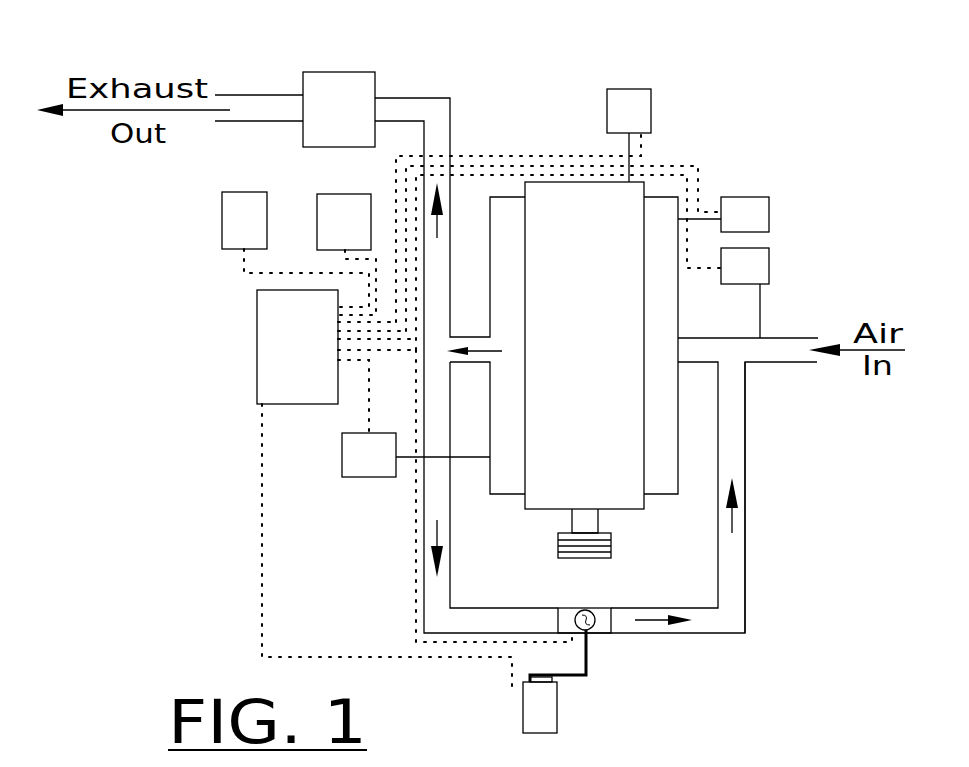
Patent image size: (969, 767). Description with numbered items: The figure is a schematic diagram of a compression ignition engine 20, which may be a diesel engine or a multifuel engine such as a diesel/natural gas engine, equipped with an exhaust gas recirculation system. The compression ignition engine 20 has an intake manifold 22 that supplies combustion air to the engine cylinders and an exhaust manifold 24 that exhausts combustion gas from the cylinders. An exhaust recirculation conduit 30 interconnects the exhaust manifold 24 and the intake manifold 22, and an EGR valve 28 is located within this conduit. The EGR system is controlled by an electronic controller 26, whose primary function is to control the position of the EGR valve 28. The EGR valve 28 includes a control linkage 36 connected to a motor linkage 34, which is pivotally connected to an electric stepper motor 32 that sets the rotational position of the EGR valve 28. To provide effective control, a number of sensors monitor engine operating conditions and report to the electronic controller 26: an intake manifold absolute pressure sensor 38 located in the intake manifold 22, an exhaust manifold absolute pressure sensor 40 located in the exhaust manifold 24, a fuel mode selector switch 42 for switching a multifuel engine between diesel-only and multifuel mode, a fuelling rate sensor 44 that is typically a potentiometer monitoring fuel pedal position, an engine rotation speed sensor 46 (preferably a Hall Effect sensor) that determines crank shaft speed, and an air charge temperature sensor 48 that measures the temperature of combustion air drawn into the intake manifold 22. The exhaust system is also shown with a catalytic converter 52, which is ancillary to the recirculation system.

The compression ignition engine 20 is at (608, 366).
The intake manifold 22 is at (663, 301).
The exhaust manifold 24 is at (503, 473).
The electronic controller 26 is at (320, 358).
The EGR valve 28 is at (603, 610).
The exhaust recirculation conduit 30 is at (737, 416).
The electric stepper motor 32 is at (535, 712).
The motor linkage 34 is at (568, 680).
The control linkage 36 is at (588, 655).
The intake manifold absolute pressure sensor 38 is at (758, 205).
The exhaust manifold absolute pressure sensor 40 is at (355, 460).
The fuel mode selector switch 42 is at (330, 208).
The fuelling rate sensor 44 is at (230, 216).
The engine rotation speed sensor 46 is at (624, 103).
The air charge temperature sensor 48 is at (752, 263).
The catalytic converter 52 is at (360, 120).